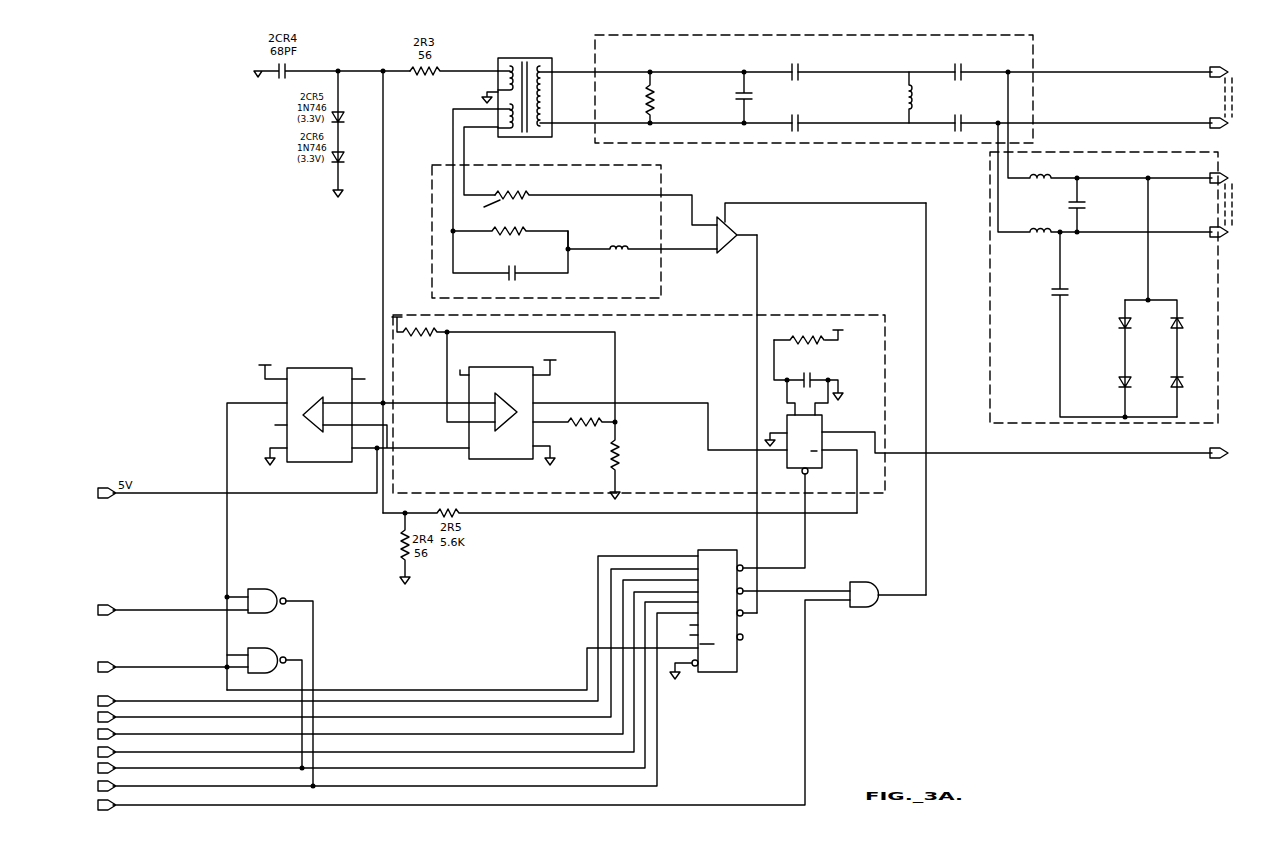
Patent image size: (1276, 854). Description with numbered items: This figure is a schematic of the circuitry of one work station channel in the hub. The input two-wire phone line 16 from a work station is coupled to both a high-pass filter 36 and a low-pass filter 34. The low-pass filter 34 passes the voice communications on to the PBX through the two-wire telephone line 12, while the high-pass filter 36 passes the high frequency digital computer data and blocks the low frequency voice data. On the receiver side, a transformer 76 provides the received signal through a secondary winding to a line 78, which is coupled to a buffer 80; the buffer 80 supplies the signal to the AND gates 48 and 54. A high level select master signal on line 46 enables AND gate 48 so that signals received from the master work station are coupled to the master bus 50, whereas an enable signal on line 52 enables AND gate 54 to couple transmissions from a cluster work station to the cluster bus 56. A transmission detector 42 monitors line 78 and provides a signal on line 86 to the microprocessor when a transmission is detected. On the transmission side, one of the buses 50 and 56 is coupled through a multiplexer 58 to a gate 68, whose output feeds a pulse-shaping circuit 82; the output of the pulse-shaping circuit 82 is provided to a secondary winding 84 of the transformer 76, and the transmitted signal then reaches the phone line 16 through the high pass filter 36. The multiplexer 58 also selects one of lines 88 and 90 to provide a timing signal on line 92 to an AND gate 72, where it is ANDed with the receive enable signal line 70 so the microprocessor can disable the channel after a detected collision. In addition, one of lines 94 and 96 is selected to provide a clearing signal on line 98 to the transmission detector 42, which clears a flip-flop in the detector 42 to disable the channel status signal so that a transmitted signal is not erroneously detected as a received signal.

The line 78 is at (396, 68).
The transformer 76 is at (552, 58).
The secondary winding 84 is at (510, 137).
The pulse-shaping circuit 82 is at (661, 176).
The high-pass filter 36 is at (1033, 42).
The two-wire phone line 16 is at (1232, 66).
The two-wire telephone line 12 is at (1232, 172).
The low-pass filter 34 is at (990, 348).
The gate 68 is at (733, 254).
The transmission detector 42 is at (853, 314).
The buffer 80 is at (340, 368).
The line 86 is at (1085, 453).
The line 98 is at (805, 538).
The line 92 is at (798, 591).
The AND gate 72 is at (869, 607).
The multiplexer 58 is at (737, 660).
The receive enable signal line 70 is at (805, 750).
The line 52 is at (185, 610).
The AND gate 54 is at (288, 598).
The line 46 is at (185, 667).
The AND gate 48 is at (268, 673).
The line 94 is at (166, 701).
The line 96 is at (197, 717).
The line 88 is at (97, 735).
The line 90 is at (97, 753).
The master bus 50 is at (96, 769).
The cluster bus 56 is at (97, 787).